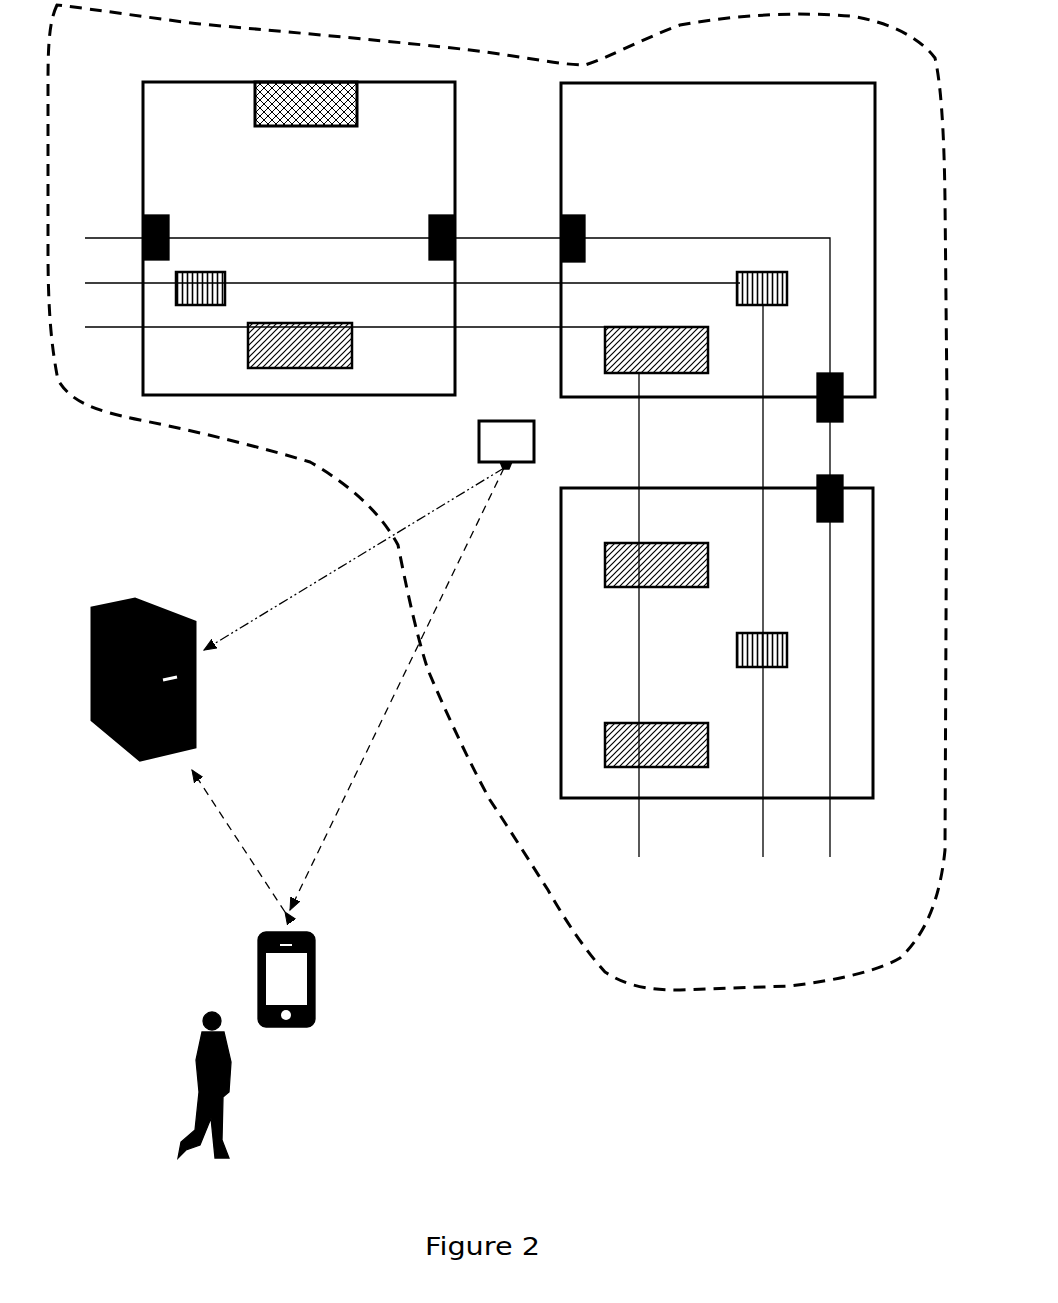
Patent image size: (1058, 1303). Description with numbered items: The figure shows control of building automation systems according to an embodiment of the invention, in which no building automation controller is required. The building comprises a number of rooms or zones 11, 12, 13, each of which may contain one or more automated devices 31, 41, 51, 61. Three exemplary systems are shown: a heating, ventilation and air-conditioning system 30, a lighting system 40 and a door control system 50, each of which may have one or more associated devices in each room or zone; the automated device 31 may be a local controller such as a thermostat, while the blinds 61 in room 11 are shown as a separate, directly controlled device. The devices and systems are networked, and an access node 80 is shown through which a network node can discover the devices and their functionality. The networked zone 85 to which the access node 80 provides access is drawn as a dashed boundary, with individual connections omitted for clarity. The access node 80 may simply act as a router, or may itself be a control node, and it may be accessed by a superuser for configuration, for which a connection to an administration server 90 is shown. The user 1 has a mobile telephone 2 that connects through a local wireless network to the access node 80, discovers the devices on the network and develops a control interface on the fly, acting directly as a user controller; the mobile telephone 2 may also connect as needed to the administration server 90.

The user 1 is at (165, 1080).
The mobile telephone 2 is at (318, 1030).
The room 11 is at (143, 110).
The room 12 is at (560, 117).
The room 13 is at (862, 805).
The heating, ventilation and air-conditioning (HVAC) system 30 is at (637, 847).
The automated device 31 is at (345, 328).
The lighting system 40 is at (762, 847).
The automated device 41 is at (228, 288).
The door control system 50 is at (828, 847).
The automated device 51 is at (172, 220).
The blinds 61 is at (360, 85).
The access node 80 is at (478, 440).
The networked zone 85 is at (615, 972).
The administration server 90 is at (145, 793).